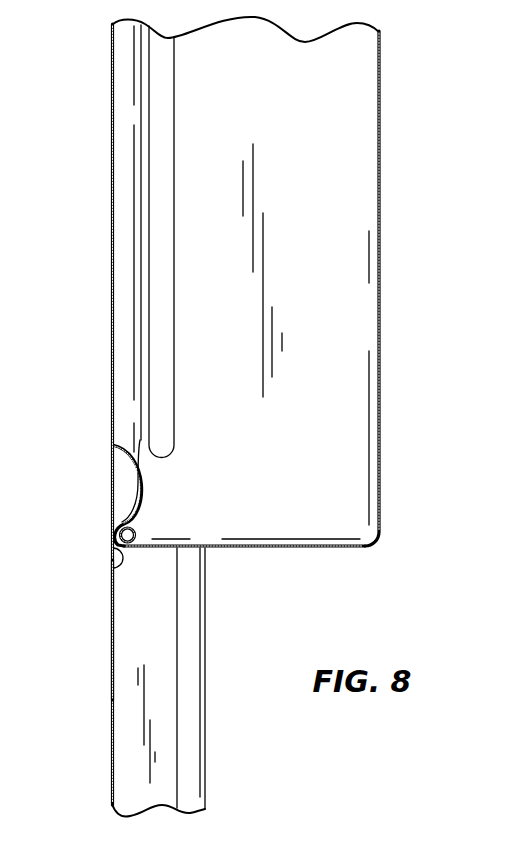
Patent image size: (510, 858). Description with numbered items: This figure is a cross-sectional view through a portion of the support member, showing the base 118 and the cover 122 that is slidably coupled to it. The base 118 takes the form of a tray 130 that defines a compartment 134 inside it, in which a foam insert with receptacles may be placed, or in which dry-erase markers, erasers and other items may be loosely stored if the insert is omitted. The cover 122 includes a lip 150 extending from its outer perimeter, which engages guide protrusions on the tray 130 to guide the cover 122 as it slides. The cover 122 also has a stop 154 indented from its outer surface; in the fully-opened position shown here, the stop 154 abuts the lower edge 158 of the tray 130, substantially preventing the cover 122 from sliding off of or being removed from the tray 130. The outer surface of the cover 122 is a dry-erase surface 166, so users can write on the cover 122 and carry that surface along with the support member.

The base 118 is at (380, 140).
The tray 130 is at (282, 548).
The compartment 134 is at (198, 90).
The stop 154 is at (145, 490).
The lower edge 158 is at (113, 567).
The dry-erase surface 166 is at (112, 637).
The cover 122 is at (110, 735).
The lip 150 is at (153, 650).